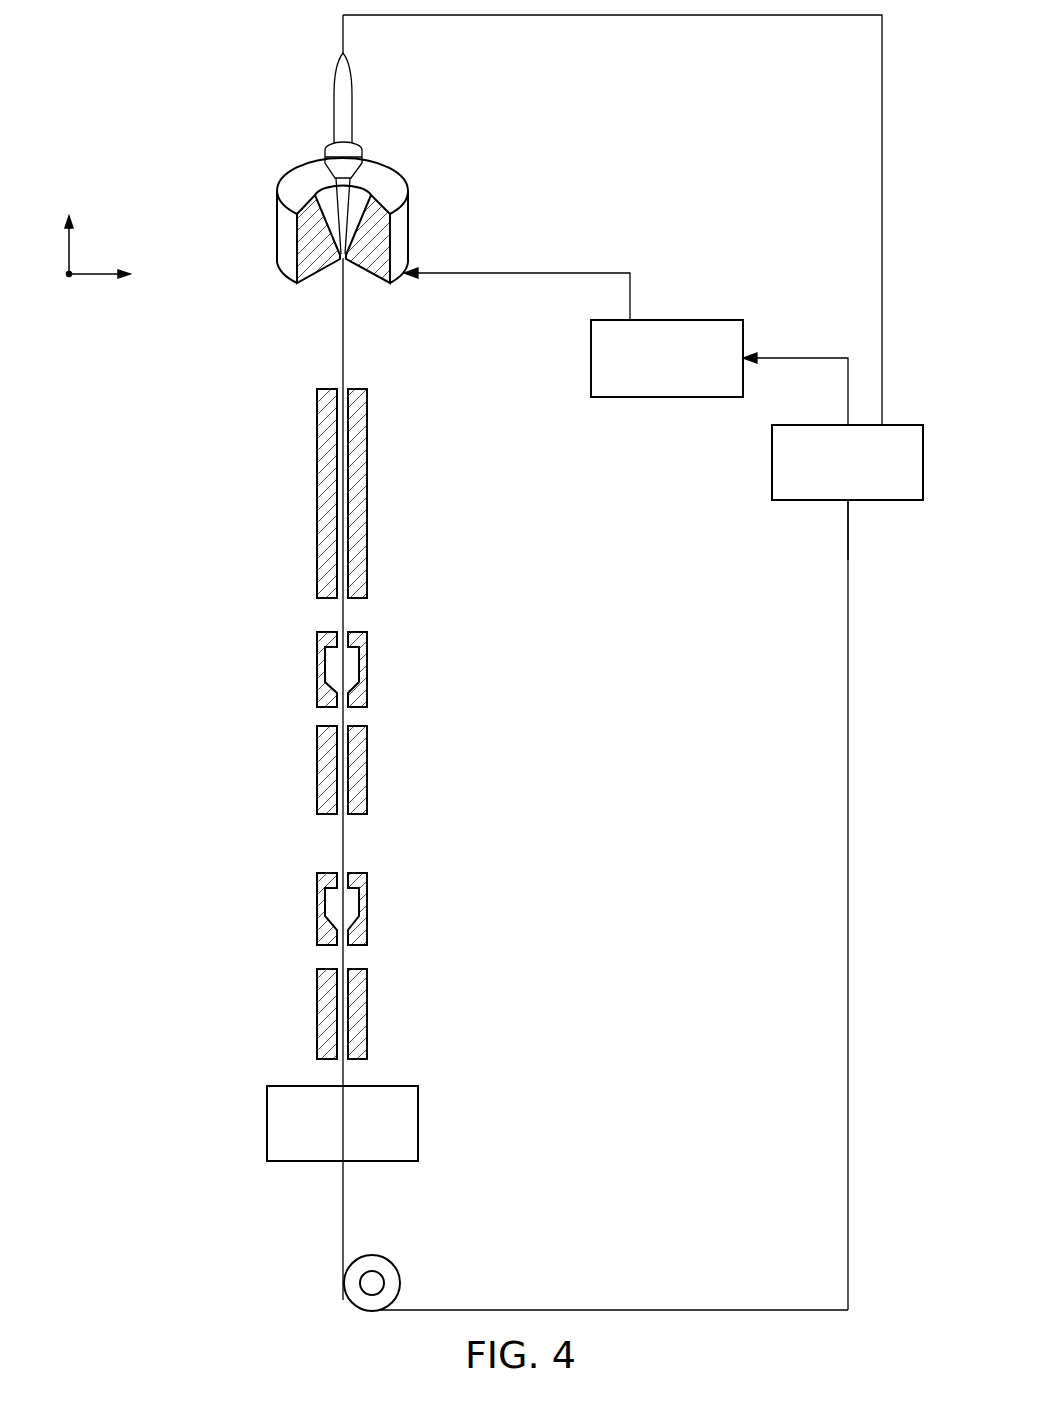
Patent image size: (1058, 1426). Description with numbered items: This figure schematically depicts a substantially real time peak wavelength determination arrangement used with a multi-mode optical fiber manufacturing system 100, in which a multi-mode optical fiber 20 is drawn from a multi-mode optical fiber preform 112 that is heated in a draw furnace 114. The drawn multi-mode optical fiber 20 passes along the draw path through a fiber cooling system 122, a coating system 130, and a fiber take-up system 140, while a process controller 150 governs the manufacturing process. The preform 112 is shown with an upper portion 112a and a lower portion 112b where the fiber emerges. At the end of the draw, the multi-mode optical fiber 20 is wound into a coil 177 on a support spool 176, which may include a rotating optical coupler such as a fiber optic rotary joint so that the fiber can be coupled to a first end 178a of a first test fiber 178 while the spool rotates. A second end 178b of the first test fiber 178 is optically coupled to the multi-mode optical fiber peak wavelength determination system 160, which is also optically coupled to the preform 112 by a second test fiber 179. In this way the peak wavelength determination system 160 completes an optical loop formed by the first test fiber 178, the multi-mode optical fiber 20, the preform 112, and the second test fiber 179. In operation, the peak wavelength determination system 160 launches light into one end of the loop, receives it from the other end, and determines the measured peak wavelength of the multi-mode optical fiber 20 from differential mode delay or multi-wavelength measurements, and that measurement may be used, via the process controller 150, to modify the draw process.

The multi-mode optical fiber manufacturing system 100 is at (499, 666).
The multi-mode optical fiber preform 112 is at (356, 153).
The needle 112a is at (337, 128).
The capillary tube 112b is at (337, 197).
The draw furnace 114 is at (430, 208).
The multi-mode optical fiber 20 is at (322, 278).
The fiber cooling system 122 is at (400, 478).
The coating system 130 is at (283, 617).
The fiber take-up system 140 is at (418, 1102).
The process controller 150 is at (717, 320).
The multi-mode optical fiber peak wavelength determination system 160 is at (910, 425).
The support spool 176 is at (362, 1283).
The coil 177 is at (395, 1259).
The first test fiber 178 is at (848, 948).
The first end of the first test fiber 178a is at (450, 1310).
The second end of the first test fiber 178b is at (848, 543).
The second test fiber 179 is at (708, 15).